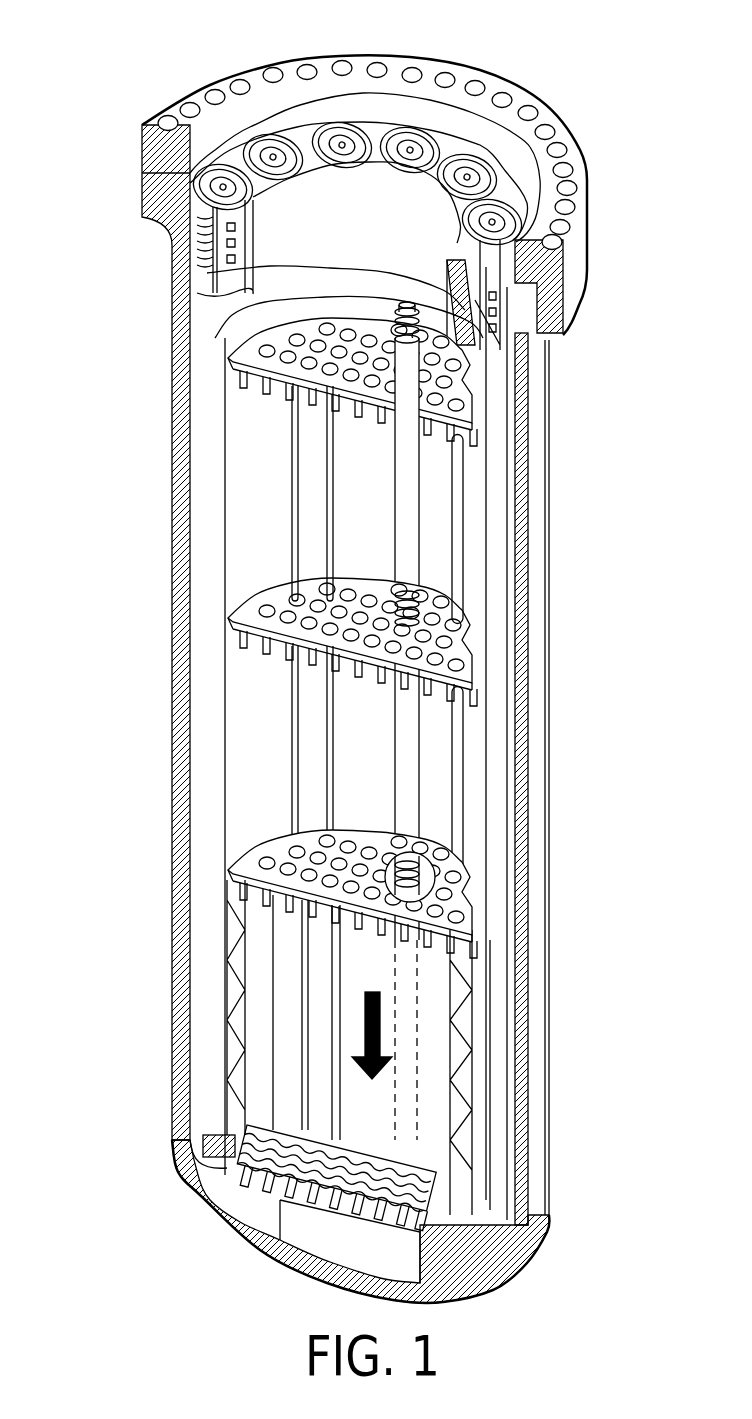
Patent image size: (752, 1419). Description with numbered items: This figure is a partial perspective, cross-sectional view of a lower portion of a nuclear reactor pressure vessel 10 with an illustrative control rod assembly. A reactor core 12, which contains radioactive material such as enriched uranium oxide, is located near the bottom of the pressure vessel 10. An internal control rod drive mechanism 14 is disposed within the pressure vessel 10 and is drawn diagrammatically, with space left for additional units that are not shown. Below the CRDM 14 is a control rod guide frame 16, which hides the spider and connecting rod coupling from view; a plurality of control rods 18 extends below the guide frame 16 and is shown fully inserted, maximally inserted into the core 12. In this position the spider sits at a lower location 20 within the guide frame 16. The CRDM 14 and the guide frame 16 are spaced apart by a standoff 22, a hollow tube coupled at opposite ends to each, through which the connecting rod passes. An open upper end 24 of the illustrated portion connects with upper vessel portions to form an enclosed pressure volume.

The nuclear reactor pressure vessel 10 is at (172, 470).
The reactor core 12 is at (205, 860).
The control rod drive mechanism (CRDM) 14 is at (430, 510).
The control rod guide frame 16 is at (426, 780).
The control rods 18 is at (420, 1013).
The lower location 20 is at (437, 868).
The standoff 22 is at (412, 588).
The open upper end 24 is at (357, 215).